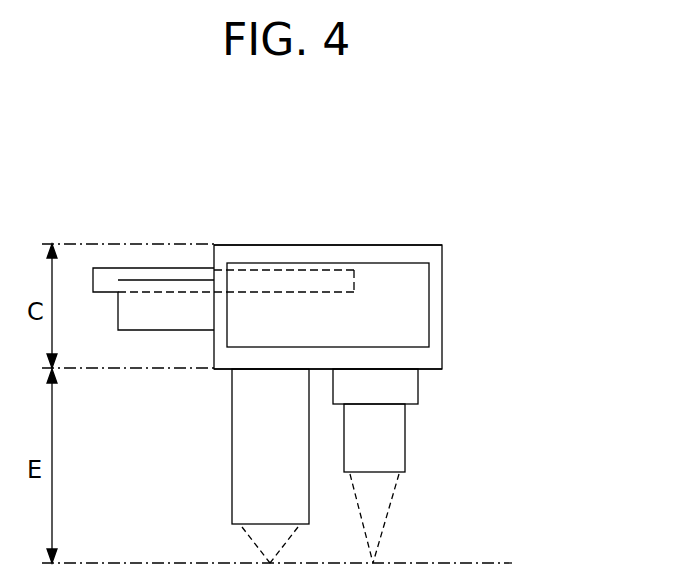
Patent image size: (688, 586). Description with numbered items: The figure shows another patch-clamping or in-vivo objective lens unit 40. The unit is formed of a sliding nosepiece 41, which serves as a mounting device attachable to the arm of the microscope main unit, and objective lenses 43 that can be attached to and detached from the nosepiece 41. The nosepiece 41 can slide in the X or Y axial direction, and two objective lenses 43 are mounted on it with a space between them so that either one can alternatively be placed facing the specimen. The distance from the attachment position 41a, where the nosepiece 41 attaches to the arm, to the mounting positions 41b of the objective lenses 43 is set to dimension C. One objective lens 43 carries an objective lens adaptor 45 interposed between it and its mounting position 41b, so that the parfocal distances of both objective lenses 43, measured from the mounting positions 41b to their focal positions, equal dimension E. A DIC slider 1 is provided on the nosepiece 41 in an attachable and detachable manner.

The DIC slider 1 is at (110, 278).
The objective lens unit 40 is at (540, 178).
The sliding nosepiece 41 is at (307, 234).
The attachment position 41a is at (405, 245).
The mounting positions 41b is at (436, 382).
The objective lens 43 is at (232, 488).
The objective lens adaptor 45 is at (405, 396).